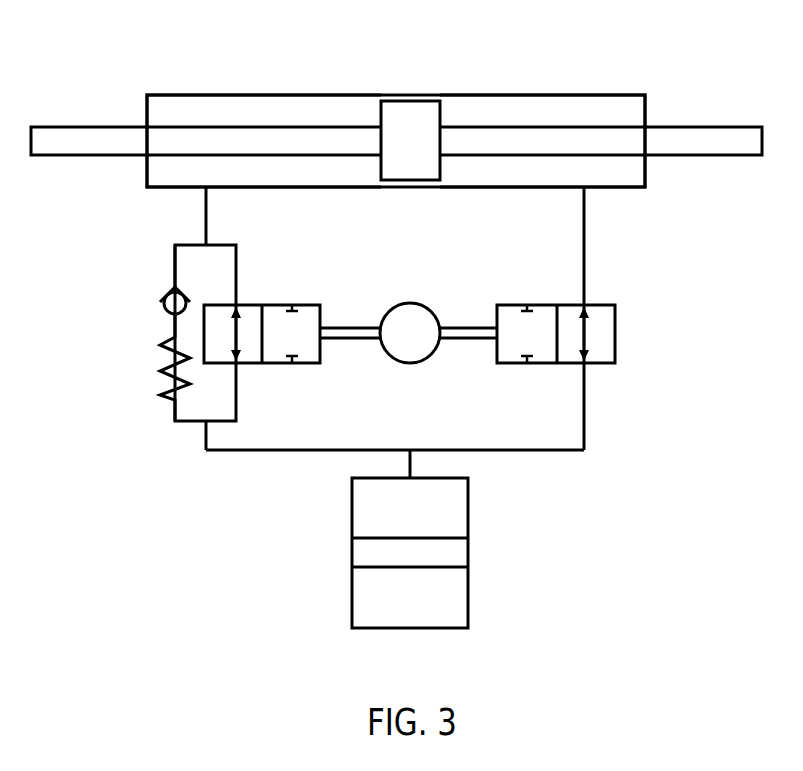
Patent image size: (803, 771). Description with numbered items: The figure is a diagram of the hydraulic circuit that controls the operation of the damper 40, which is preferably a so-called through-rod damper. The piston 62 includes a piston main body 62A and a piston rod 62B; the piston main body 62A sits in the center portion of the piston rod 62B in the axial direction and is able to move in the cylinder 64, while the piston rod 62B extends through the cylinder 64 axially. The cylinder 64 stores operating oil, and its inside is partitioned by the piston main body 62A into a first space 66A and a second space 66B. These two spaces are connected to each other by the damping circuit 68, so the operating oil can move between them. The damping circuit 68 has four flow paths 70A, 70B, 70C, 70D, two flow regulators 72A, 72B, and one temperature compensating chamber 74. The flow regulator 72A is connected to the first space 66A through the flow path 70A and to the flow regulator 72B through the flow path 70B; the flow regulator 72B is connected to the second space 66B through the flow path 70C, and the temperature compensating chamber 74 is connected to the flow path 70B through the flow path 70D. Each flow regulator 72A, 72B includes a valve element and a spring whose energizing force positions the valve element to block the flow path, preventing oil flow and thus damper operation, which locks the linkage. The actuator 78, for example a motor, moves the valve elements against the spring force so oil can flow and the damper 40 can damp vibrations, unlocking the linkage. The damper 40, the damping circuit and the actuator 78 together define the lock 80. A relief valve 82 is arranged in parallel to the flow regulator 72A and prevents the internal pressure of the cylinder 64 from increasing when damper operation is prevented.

The damper 40 is at (156, 93).
The piston 62 is at (498, 125).
The piston main body 62A is at (409, 101).
The piston rod 62B is at (572, 127).
The cylinder 64 is at (233, 95).
The first space 66A is at (291, 182).
The second space 66B is at (546, 182).
The damping circuit 68 is at (592, 228).
The flow path 70A is at (208, 222).
The flow path 70B is at (277, 452).
The flow path 70C is at (586, 272).
The flow path 70D is at (413, 462).
The flow regulator 72A is at (327, 294).
The flow regulator 72B is at (493, 294).
The temperature compensating chamber 74 is at (469, 506).
The actuator 78 is at (410, 363).
The lock 80 is at (672, 73).
The relief valve 82 is at (158, 313).